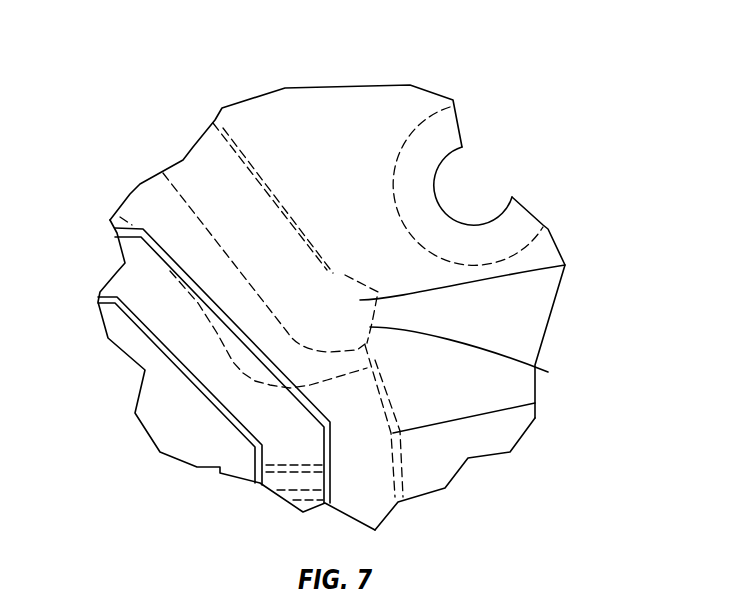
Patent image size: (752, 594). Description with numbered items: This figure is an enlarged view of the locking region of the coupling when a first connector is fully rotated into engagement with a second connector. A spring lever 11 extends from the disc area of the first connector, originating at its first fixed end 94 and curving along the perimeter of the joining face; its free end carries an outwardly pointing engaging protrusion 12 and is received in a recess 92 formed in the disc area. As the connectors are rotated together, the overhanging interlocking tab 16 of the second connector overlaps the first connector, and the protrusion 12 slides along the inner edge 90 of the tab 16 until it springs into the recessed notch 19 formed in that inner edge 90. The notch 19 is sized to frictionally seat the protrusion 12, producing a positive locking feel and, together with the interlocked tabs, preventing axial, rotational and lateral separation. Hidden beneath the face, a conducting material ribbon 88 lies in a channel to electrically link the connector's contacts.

The spring lever 11 is at (286, 152).
The engaging protrusion 12 is at (545, 372).
The interlocking tab 16 is at (565, 265).
The notch 19 is at (404, 274).
The conducting material ribbon 88 is at (150, 376).
The inner edge 90 is at (253, 170).
The recess 92 is at (218, 347).
The first fixed end 94 is at (196, 332).